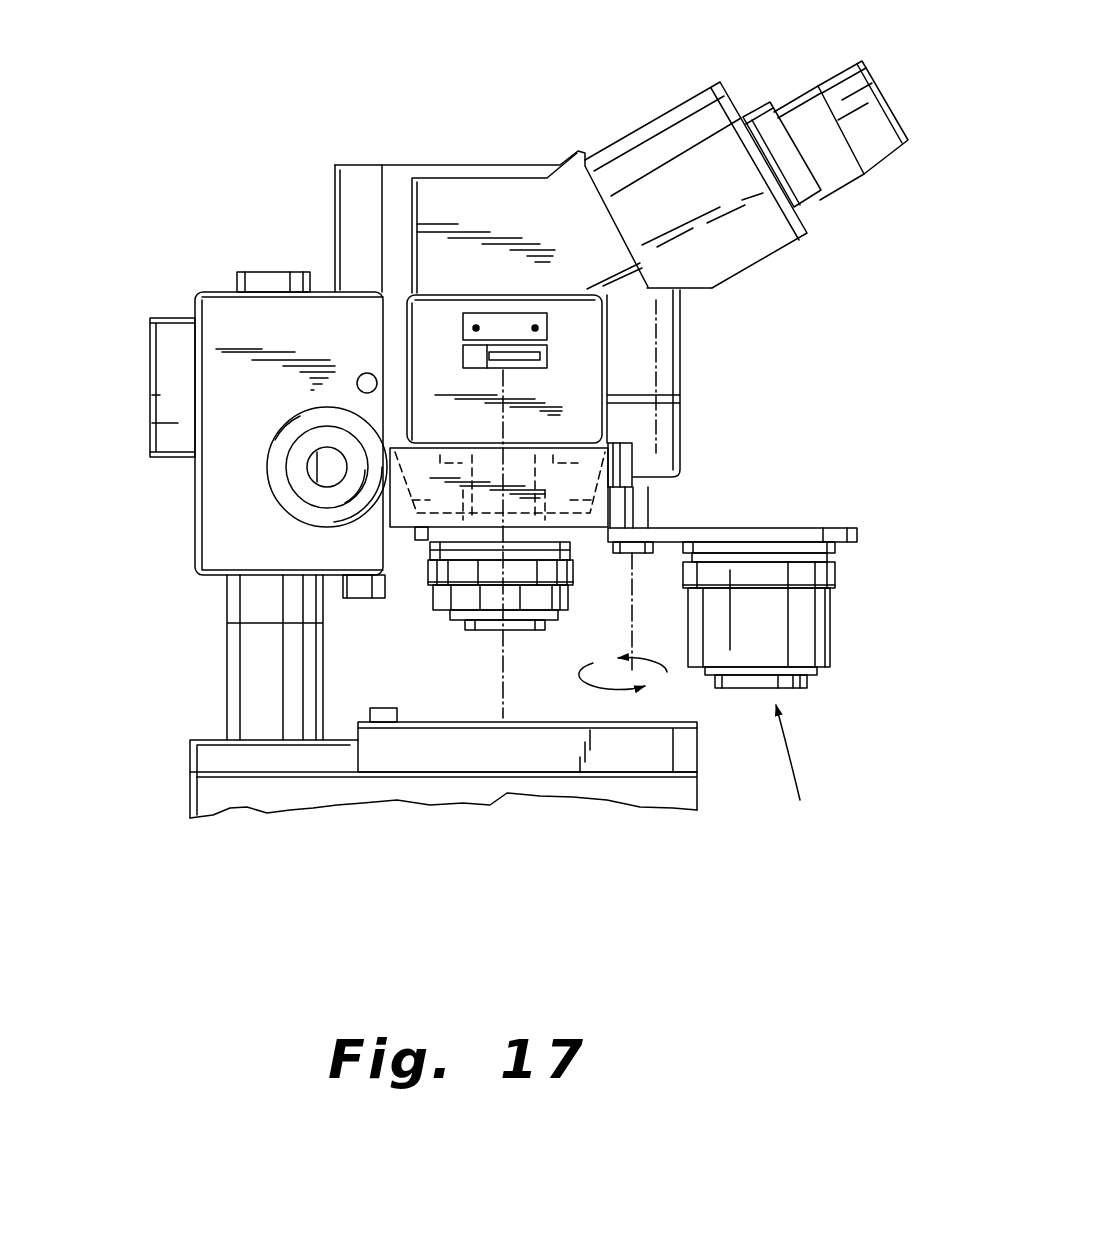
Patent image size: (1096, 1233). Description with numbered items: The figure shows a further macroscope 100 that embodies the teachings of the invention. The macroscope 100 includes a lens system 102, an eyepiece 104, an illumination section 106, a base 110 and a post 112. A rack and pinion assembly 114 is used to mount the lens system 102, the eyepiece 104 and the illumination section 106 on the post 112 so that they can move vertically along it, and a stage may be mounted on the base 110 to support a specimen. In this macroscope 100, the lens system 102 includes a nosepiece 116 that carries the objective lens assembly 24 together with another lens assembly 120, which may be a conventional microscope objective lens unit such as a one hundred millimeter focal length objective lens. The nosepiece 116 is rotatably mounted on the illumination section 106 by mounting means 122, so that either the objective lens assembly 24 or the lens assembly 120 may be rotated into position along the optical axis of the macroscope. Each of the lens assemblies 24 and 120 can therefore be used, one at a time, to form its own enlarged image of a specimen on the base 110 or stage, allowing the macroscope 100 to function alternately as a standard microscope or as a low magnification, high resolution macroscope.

The macroscope 100 is at (147, 138).
The eyepiece 104 is at (487, 140).
The illumination section 106 is at (697, 373).
The lens system 102 is at (768, 482).
The nosepiece 116 is at (858, 528).
The lens assembly 120 is at (845, 643).
The mounting means 122 is at (650, 556).
The objective lens assembly 24 is at (418, 613).
The base 110 is at (541, 722).
The post 112 is at (233, 677).
The rack and pinion assembly 114 is at (148, 483).